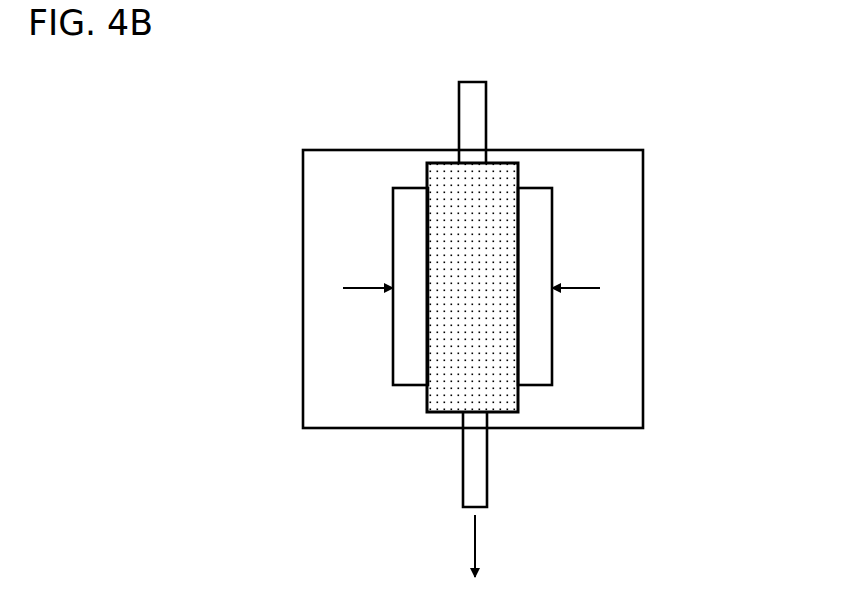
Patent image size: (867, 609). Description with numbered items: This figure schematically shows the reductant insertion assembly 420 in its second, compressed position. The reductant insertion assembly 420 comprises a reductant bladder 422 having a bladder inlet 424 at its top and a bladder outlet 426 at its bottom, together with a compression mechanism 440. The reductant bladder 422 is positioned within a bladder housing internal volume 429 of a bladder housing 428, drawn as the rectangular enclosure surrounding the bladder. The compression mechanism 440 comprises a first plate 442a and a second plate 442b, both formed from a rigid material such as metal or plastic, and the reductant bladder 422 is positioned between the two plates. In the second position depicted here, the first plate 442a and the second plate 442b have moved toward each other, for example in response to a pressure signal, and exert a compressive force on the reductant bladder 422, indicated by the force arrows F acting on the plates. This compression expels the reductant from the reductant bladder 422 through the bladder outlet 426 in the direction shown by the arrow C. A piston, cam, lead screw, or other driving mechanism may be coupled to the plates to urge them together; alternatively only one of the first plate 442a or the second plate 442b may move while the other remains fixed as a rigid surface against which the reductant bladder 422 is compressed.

The reductant insertion assembly 420 is at (473, 317).
The reductant bladder 422 is at (507, 385).
The bladder inlet 424 is at (463, 97).
The bladder outlet 426 is at (473, 467).
The bladder housing 428 is at (643, 186).
The bladder housing internal volume 429 is at (633, 315).
The compression mechanism 440 is at (380, 368).
The first plate 442a is at (415, 245).
The second plate 442b is at (530, 258).